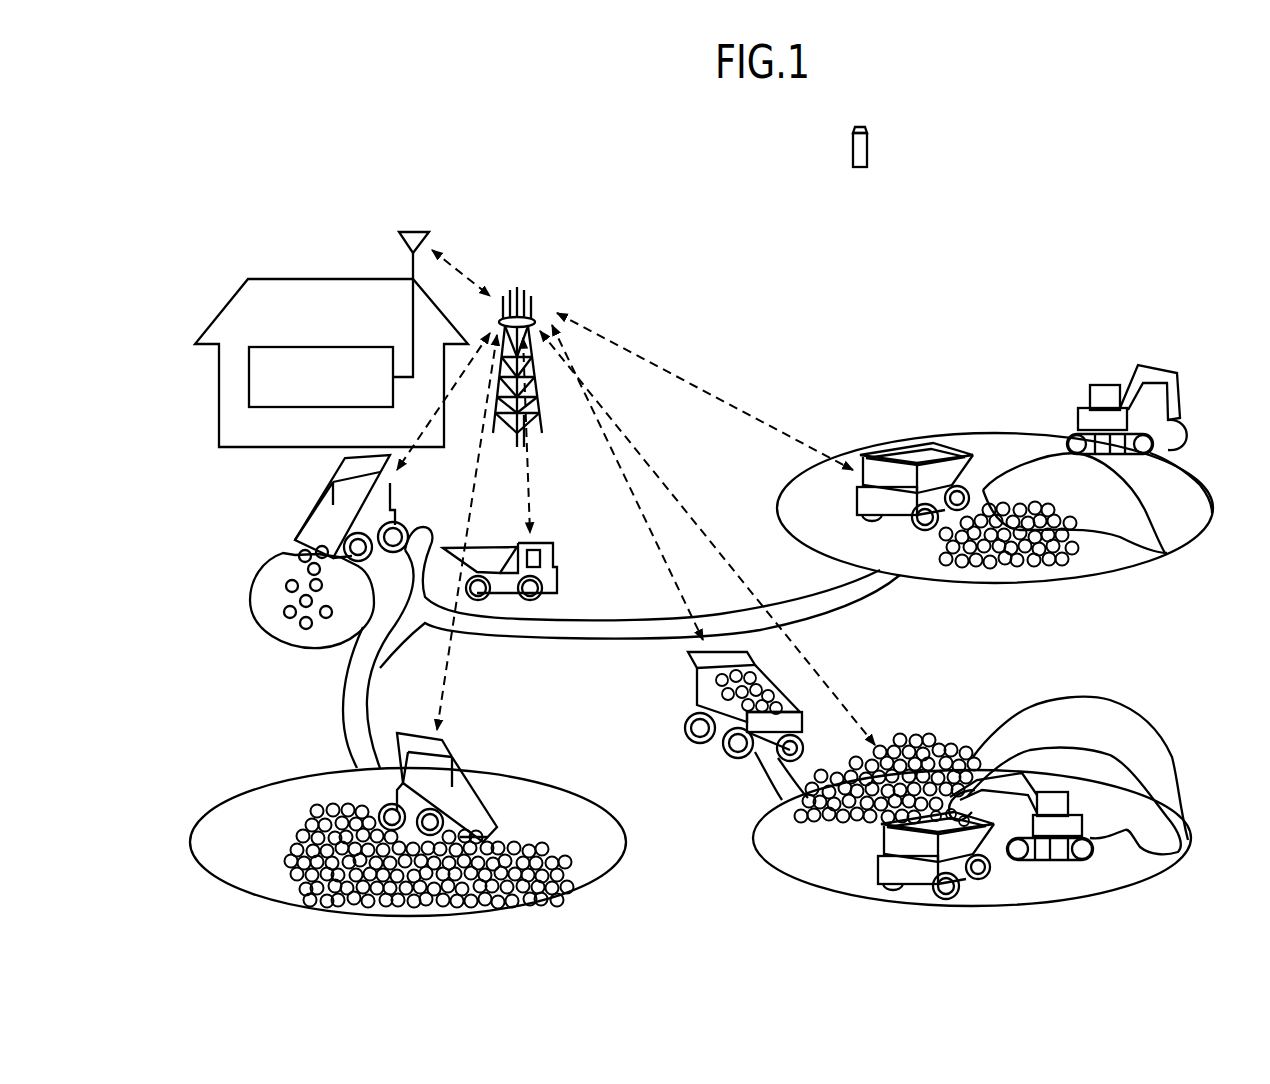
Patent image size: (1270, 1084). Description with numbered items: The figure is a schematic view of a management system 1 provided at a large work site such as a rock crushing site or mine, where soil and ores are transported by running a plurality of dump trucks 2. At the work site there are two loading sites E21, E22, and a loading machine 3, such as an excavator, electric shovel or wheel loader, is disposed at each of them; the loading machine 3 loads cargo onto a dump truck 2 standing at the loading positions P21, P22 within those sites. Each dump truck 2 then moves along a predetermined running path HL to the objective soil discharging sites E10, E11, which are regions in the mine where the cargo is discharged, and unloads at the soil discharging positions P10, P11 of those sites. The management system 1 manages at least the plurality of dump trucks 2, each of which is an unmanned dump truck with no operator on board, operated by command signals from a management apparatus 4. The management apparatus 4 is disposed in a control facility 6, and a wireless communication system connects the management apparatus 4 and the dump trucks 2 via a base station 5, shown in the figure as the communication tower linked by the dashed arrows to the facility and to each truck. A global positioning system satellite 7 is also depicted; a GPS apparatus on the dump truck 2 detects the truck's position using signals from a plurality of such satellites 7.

The management system 1 is at (1052, 172).
The dump truck 2 is at (326, 491).
The loading machine 3 is at (1103, 384).
The management apparatus 4 is at (308, 342).
The base station 5 is at (526, 266).
The control facility 6 is at (226, 288).
The global positioning system (GPS) satellite 7 is at (860, 168).
The running path HL is at (562, 640).
The soil discharging site E10 is at (283, 655).
The soil discharging site E11 is at (255, 912).
The loading site E21 is at (963, 433).
The loading site E22 is at (1063, 908).
The soil discharging position P10 is at (273, 521).
The soil discharging position P11 is at (522, 816).
The loading position P21 is at (892, 550).
The loading position P22 is at (1009, 895).